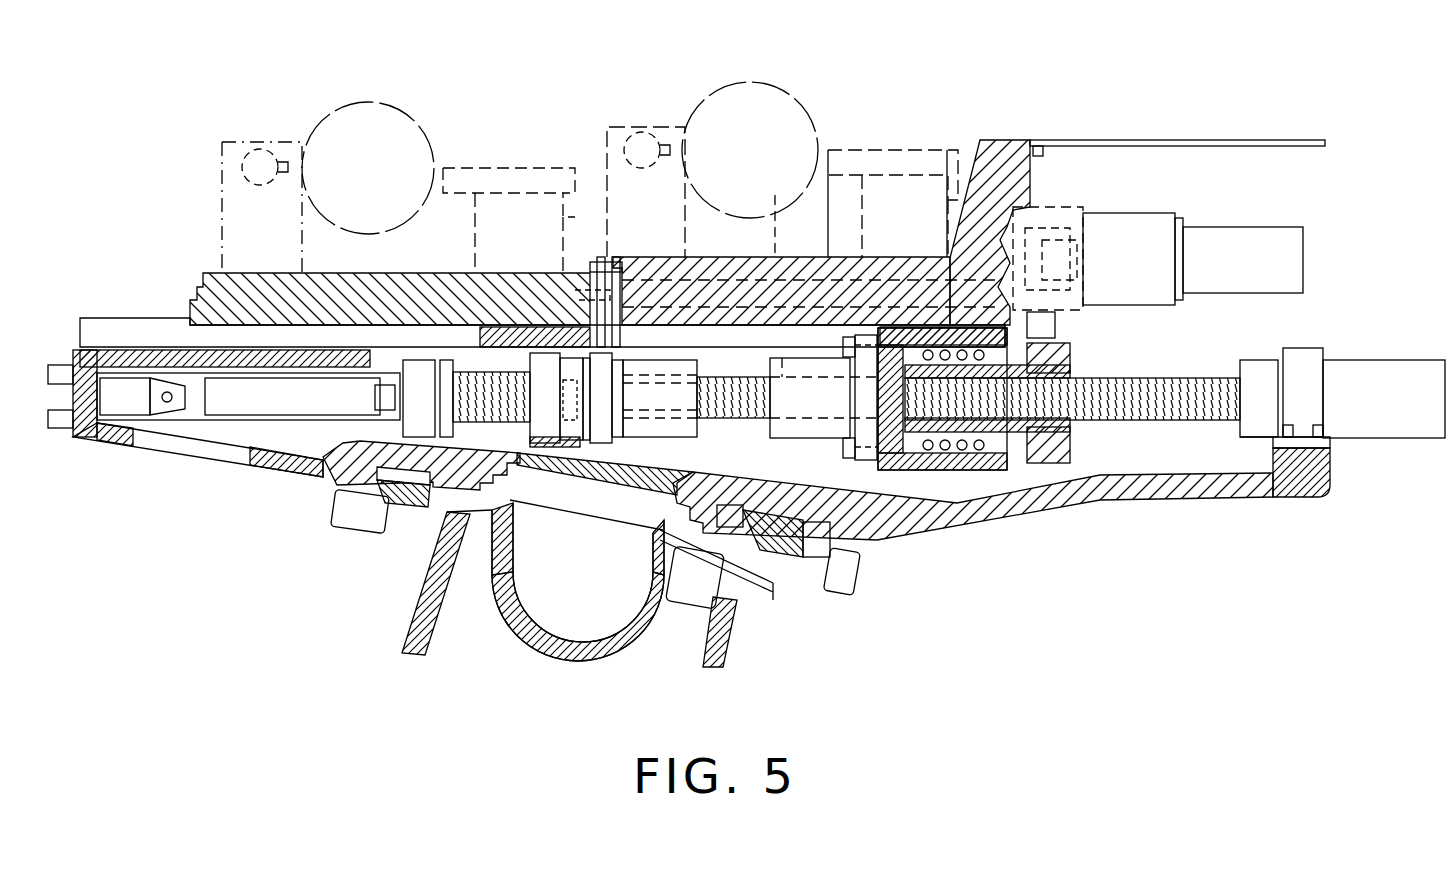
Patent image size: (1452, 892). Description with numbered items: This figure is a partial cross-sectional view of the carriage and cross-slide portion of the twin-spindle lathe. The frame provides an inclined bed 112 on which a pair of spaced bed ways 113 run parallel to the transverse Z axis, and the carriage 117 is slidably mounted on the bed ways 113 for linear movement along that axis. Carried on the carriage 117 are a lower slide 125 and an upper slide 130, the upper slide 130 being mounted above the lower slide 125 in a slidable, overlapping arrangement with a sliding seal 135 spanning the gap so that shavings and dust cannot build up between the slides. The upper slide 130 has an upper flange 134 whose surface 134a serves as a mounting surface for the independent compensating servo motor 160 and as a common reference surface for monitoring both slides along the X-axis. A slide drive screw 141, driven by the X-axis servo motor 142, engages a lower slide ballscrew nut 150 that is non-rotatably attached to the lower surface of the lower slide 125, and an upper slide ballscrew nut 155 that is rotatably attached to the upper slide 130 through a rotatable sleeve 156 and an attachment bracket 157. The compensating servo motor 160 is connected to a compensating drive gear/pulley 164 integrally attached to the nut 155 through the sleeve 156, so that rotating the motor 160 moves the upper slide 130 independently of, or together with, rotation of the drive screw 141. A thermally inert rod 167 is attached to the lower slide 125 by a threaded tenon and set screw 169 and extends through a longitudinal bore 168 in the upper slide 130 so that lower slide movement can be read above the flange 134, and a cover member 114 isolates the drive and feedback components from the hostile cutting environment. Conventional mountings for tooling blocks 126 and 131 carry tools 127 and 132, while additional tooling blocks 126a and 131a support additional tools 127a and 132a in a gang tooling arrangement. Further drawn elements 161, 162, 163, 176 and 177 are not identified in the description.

The inclined bed 112 is at (430, 535).
The bed ways 113 is at (395, 515).
The cover member 114 is at (1217, 140).
The carriage 117 is at (1000, 500).
The lower slide 125 is at (440, 272).
The tooling block 126 is at (533, 200).
The additional tooling block 126a is at (238, 219).
The tool 127 is at (455, 180).
The additional tool 127a is at (265, 158).
The upper slide 130 is at (928, 222).
The tooling block 131 is at (862, 232).
The additional tooling block 131a is at (612, 140).
The tool 132 is at (855, 150).
The additional tool 132a is at (706, 68).
The upper flange 134 is at (1003, 140).
The reference surface 134a is at (1110, 103).
The sliding seal 135 is at (600, 258).
The slide drive screw 141 is at (1188, 378).
The X-axis servo motor 142 is at (1412, 360).
The lower slide ballscrew nut 150 is at (655, 438).
The upper slide ballscrew nut 155 is at (822, 438).
The rotatable sleeve 156 is at (1070, 430).
The attachment bracket 157 is at (905, 378).
The independent compensating servo motor 160 is at (1230, 240).
The motor 161 is at (1130, 218).
The gear box 162 is at (1105, 185).
The collar 163 is at (1052, 327).
The compensating drive gear/pulley 164 is at (1070, 360).
The thermally inert rod 167 is at (672, 280).
The longitudinal bore 168 is at (773, 215).
The threaded tenon and set screw 169 is at (585, 268).
The roller 176 is at (745, 118).
The roller 177 is at (373, 125).